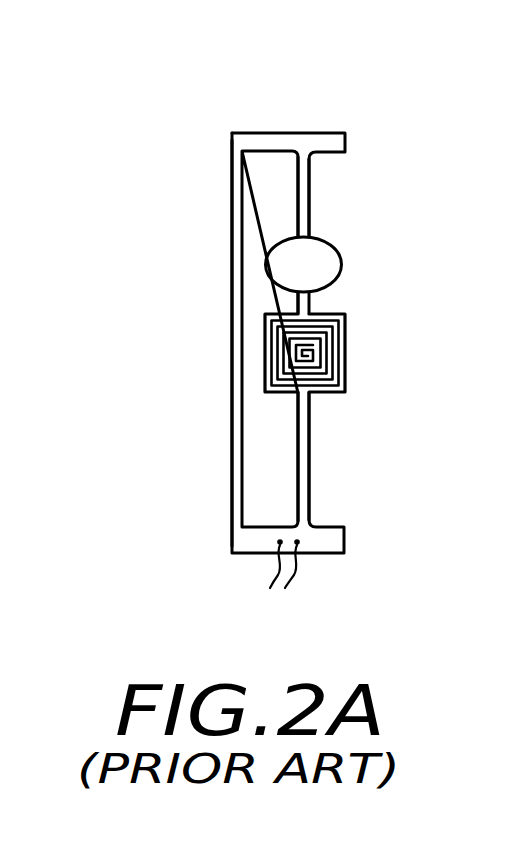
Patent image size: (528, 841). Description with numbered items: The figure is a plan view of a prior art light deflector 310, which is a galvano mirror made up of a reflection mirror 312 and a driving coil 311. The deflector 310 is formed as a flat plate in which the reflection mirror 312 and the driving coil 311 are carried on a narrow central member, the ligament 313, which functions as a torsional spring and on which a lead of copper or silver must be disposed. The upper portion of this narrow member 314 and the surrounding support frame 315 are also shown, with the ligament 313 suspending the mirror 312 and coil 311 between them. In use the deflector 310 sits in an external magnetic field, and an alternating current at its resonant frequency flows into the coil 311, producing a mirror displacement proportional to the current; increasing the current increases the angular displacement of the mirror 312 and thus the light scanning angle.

The light deflector 310 is at (284, 122).
The driving coil 311 is at (345, 351).
The reflection mirror 312 is at (342, 265).
The ligament 313 is at (309, 458).
The upper lead conductor 314 is at (309, 195).
The frame (outer support) 315 is at (232, 350).